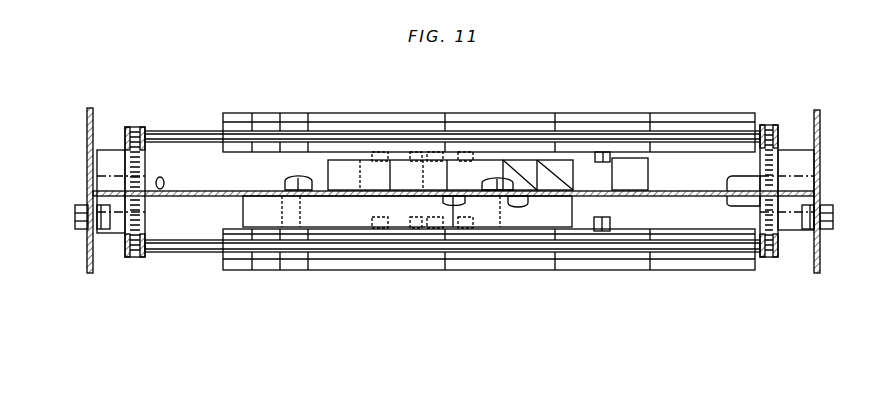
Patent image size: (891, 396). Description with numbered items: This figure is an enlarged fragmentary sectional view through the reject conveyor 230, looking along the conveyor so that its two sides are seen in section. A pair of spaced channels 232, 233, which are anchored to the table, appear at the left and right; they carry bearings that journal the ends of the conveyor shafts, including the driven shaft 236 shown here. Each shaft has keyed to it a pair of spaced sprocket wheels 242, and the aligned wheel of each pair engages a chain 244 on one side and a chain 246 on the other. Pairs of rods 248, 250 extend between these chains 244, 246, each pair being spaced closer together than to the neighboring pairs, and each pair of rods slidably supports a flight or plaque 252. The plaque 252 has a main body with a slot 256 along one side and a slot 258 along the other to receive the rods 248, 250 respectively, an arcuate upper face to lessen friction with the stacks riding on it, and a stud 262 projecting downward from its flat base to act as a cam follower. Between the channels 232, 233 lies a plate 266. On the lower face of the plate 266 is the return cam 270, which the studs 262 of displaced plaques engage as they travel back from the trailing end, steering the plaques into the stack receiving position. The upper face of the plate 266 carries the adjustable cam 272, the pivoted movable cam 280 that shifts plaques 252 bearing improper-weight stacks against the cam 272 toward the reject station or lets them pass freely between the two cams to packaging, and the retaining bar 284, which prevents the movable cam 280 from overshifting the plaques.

The conveyor 230 is at (768, 120).
The channel 232 is at (87, 137).
The channel 233 is at (820, 138).
The driven shaft 236 is at (160, 176).
The sprocket wheel 242 is at (132, 258).
The chain 244 is at (780, 133).
The chain 246 is at (127, 130).
The rod 248 is at (203, 252).
The rod 250 is at (184, 132).
The plaque 252 is at (519, 104).
The slot 256 is at (663, 250).
The slot 258 is at (553, 128).
The stud 262 is at (381, 152).
The plate 266 is at (700, 196).
The return cam 270 is at (562, 223).
The adjustable cam 272 is at (337, 165).
The movable cam 280 is at (650, 171).
The retaining bar 284 is at (419, 170).